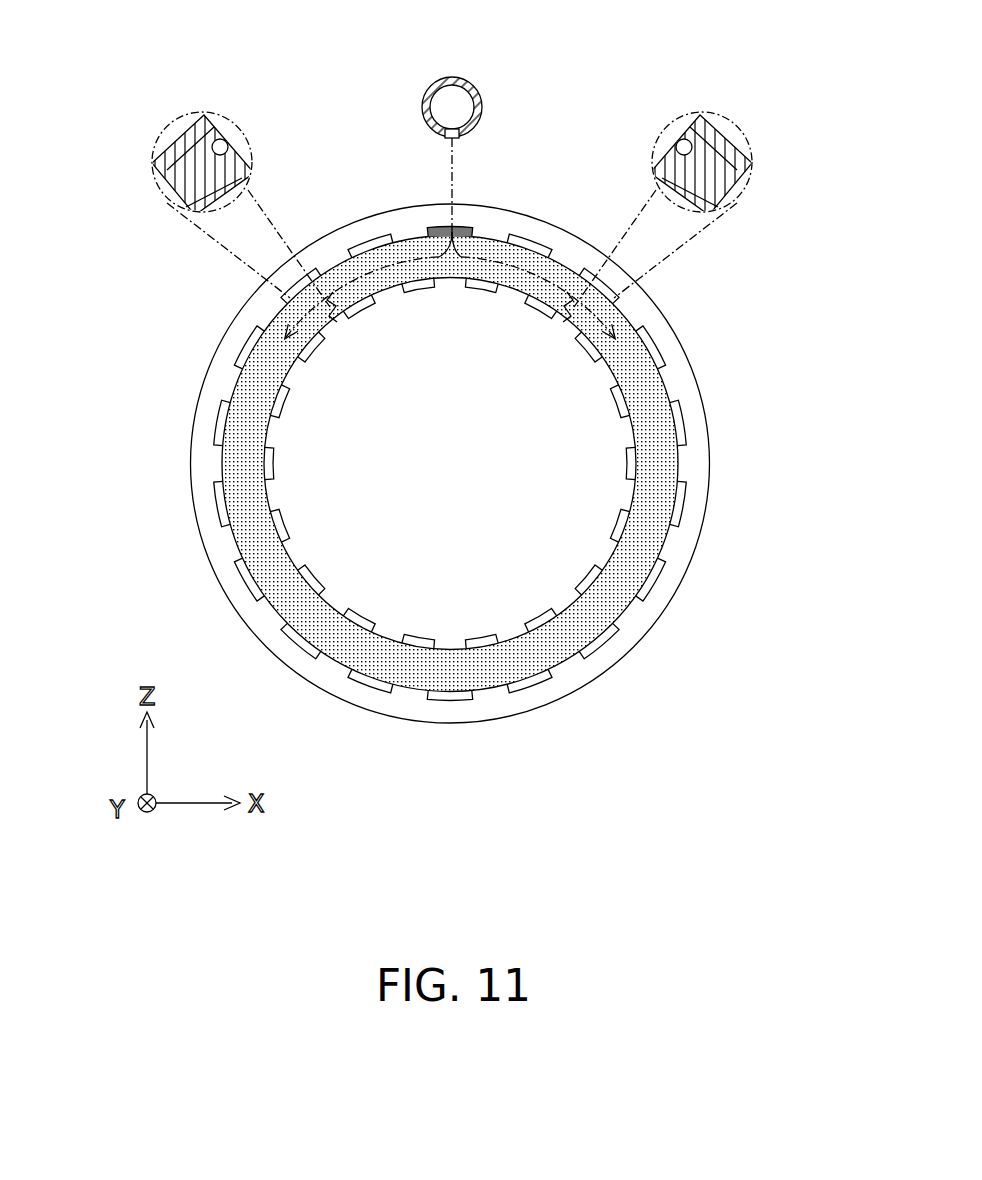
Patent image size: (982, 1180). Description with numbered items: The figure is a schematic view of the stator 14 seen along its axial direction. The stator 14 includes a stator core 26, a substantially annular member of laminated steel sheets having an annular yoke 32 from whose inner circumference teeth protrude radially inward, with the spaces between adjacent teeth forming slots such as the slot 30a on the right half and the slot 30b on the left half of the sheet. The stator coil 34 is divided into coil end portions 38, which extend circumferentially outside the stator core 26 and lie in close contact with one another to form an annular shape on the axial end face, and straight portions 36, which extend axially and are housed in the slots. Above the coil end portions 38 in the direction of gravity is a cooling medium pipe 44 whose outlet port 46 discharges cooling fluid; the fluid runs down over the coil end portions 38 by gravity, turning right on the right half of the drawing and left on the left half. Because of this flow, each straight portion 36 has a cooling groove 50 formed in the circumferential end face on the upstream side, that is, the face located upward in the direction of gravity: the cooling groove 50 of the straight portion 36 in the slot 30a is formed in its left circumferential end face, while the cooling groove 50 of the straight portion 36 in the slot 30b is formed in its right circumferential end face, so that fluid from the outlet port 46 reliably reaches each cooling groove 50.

The stator 14 is at (170, 563).
The stator core 26 is at (705, 401).
The yoke 32 is at (516, 463).
The stator coil 34 is at (462, 443).
The straight portion 36 is at (172, 196).
The coil end portion 38 is at (682, 463).
The slot 30a is at (571, 312).
The slot 30b is at (331, 308).
The cooling medium pipe 44 is at (462, 80).
The outlet port 46 is at (456, 137).
The cooling groove 50 is at (226, 142).